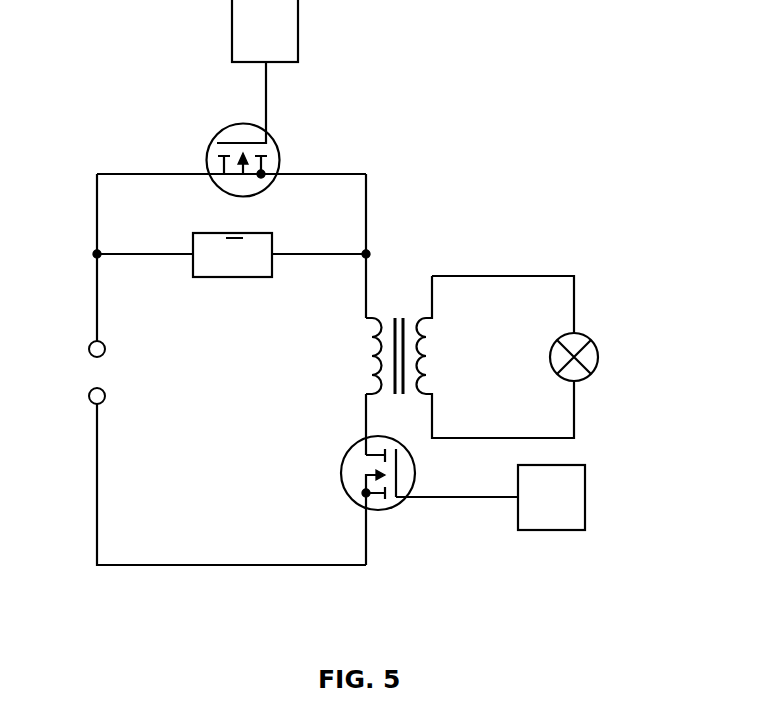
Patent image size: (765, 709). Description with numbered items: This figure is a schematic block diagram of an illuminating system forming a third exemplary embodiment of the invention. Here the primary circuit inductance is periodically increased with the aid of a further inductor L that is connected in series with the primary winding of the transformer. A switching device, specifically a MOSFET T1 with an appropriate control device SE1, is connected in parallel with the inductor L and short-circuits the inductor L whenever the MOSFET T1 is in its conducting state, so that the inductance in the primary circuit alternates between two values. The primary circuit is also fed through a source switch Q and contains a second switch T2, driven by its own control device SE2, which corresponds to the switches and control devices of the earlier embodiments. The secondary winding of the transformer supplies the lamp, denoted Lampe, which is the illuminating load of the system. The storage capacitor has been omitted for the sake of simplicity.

The control device SE1 is at (265, 31).
The MOSFET T1 is at (262, 129).
The inductor L is at (232, 255).
The switch (Schalter) Q is at (80, 372).
The lamp Lampe is at (622, 357).
The switch T2 is at (379, 494).
The control device SE2 is at (490, 497).